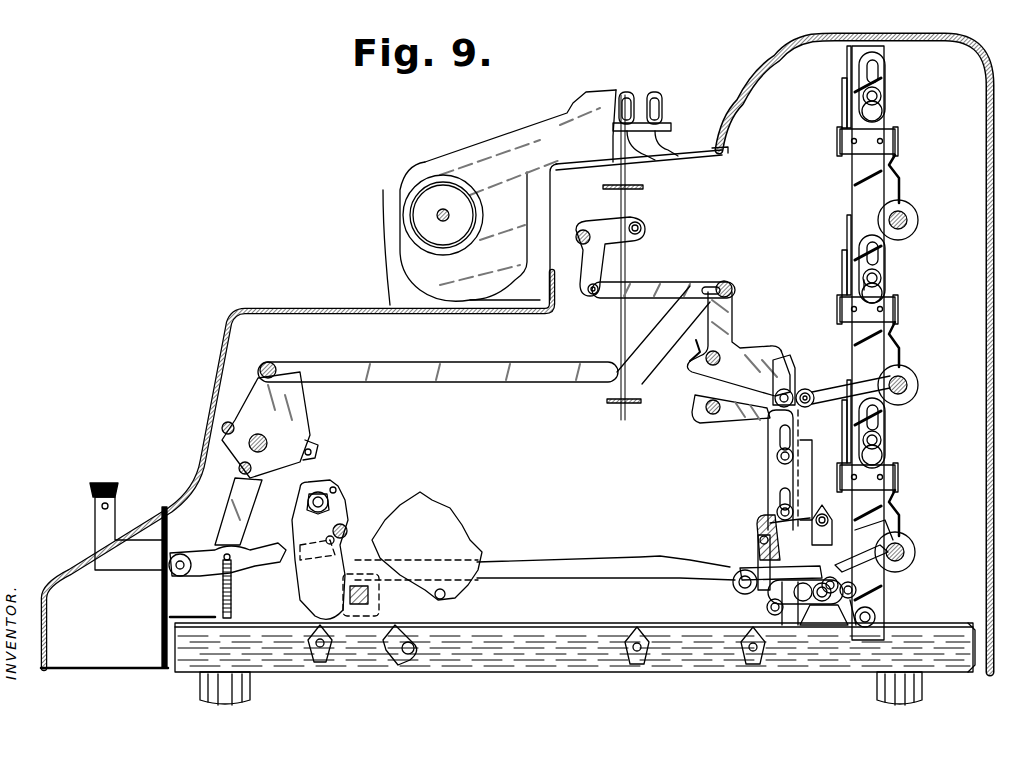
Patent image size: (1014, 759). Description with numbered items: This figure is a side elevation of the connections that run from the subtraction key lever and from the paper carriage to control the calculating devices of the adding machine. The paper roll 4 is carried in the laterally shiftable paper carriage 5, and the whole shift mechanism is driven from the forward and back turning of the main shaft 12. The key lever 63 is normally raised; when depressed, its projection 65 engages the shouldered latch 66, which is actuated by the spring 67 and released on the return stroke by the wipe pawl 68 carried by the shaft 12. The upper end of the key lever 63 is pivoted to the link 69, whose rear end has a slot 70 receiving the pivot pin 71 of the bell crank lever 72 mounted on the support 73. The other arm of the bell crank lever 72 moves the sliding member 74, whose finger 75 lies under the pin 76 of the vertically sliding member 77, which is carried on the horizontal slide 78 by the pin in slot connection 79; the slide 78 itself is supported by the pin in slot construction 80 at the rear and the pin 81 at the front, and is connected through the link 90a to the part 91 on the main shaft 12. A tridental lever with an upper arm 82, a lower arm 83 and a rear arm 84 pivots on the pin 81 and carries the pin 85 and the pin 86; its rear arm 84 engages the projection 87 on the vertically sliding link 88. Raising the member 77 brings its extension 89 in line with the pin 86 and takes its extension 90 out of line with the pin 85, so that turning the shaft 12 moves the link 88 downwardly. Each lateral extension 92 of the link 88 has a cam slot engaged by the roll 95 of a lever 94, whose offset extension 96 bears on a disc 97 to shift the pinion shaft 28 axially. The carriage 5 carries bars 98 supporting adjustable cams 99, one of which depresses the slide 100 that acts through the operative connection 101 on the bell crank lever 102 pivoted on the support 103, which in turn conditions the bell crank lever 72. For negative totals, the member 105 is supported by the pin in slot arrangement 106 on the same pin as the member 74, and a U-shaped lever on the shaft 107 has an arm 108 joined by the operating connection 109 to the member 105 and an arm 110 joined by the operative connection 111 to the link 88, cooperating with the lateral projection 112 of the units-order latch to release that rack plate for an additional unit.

The paper roll 4 is at (432, 205).
The paper carriage 5 is at (505, 152).
The main shaft 12 is at (356, 602).
The pinion shaft 28 is at (907, 220).
The key lever 63 is at (125, 555).
The projection 65 is at (232, 575).
The shouldered latch 66 is at (245, 548).
The spring 67 is at (256, 436).
The wipe pawl 68 is at (322, 590).
The link 69 is at (462, 378).
The slot 70 is at (725, 296).
The pivot pin 71 is at (732, 290).
The bell crank lever 72 is at (718, 350).
The support 73 is at (710, 362).
The sliding member 74 is at (770, 448).
The finger 75 is at (758, 528).
The pin 76 is at (823, 512).
The vertically sliding member 77 is at (880, 528).
The horizontal slide 78 is at (815, 622).
The pin in slot connection 79 is at (870, 560).
The pin in slot construction 80 is at (875, 618).
The pin 81 is at (768, 596).
The upper arm 82 is at (750, 568).
The lower arm 83 is at (790, 600).
The rear arm 84 is at (838, 586).
The pin 85 is at (758, 545).
The pin 86 is at (778, 612).
The projection 87 is at (855, 592).
The vertically sliding link 88 is at (870, 340).
The extension 89 is at (845, 640).
The extension 90 is at (790, 520).
The link 90a is at (612, 565).
The part 91 is at (372, 542).
The lateral extension 92 is at (848, 68).
The lever 94 is at (843, 112).
The roll 95 is at (882, 82).
The offset extension 96 is at (897, 170).
The disc 97 is at (910, 208).
The bar 98 is at (655, 92).
The cam 99 is at (660, 150).
The slide 100 is at (625, 196).
The operative connection 101 is at (641, 229).
The bell crank lever 102 is at (590, 292).
The support 103 is at (585, 230).
The member 105 is at (780, 466).
The pin in slot arrangement 106 is at (778, 505).
The shaft 107 is at (690, 275).
The arm 108 is at (740, 412).
The operating connection 109 is at (776, 394).
The arm 110 is at (806, 390).
The operative connection 111 is at (810, 406).
The lateral projection 112 is at (810, 515).